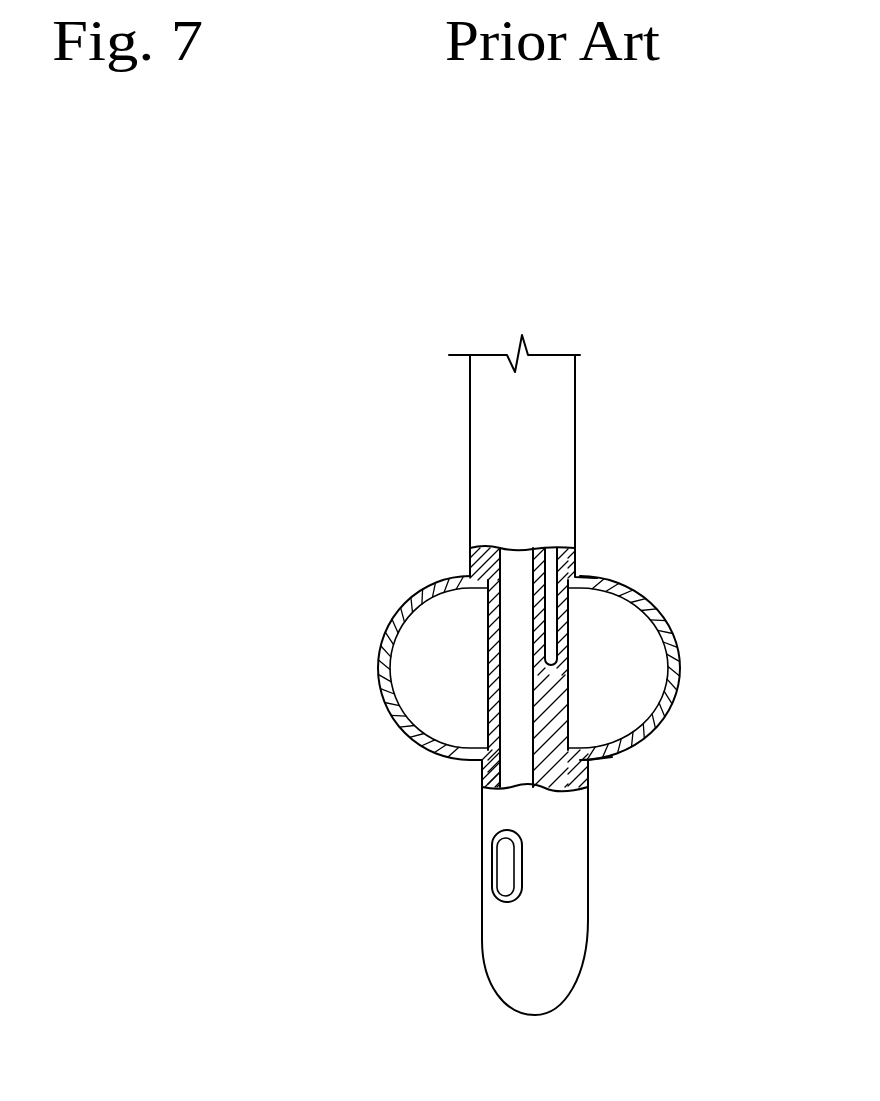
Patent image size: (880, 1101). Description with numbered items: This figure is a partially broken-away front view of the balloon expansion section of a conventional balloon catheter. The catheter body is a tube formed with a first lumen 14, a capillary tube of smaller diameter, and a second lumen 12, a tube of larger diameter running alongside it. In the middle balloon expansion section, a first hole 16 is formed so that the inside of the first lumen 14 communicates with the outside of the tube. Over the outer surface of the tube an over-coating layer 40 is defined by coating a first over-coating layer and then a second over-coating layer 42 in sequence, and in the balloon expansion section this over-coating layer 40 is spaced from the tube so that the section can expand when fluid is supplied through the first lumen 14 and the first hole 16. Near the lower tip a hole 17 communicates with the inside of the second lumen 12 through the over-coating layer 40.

The second lumen 12 is at (480, 775).
The first lumen 14 is at (580, 548).
The first hole 16 is at (563, 672).
The drainage eyelet 17 is at (508, 870).
The over-coating layer 40 is at (563, 707).
The second over-coating layer 42 is at (610, 730).